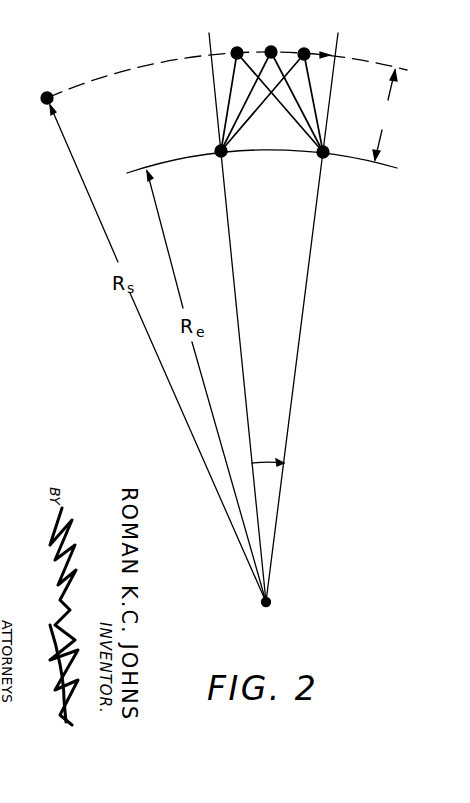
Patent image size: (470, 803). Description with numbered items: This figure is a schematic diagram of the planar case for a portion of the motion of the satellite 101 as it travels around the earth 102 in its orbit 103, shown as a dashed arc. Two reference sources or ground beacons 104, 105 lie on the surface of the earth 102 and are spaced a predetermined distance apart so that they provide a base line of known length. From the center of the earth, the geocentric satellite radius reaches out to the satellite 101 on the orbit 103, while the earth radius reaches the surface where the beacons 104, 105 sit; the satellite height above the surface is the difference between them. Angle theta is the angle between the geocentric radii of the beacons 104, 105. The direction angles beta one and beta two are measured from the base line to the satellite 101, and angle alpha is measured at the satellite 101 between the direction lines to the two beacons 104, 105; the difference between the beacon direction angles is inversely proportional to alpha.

The satellite 101 is at (52, 93).
The earth 102 is at (364, 261).
The orbit 103 is at (418, 74).
The reference source or ground beacon 104 is at (216, 147).
The reference source or ground beacon 105 is at (320, 157).